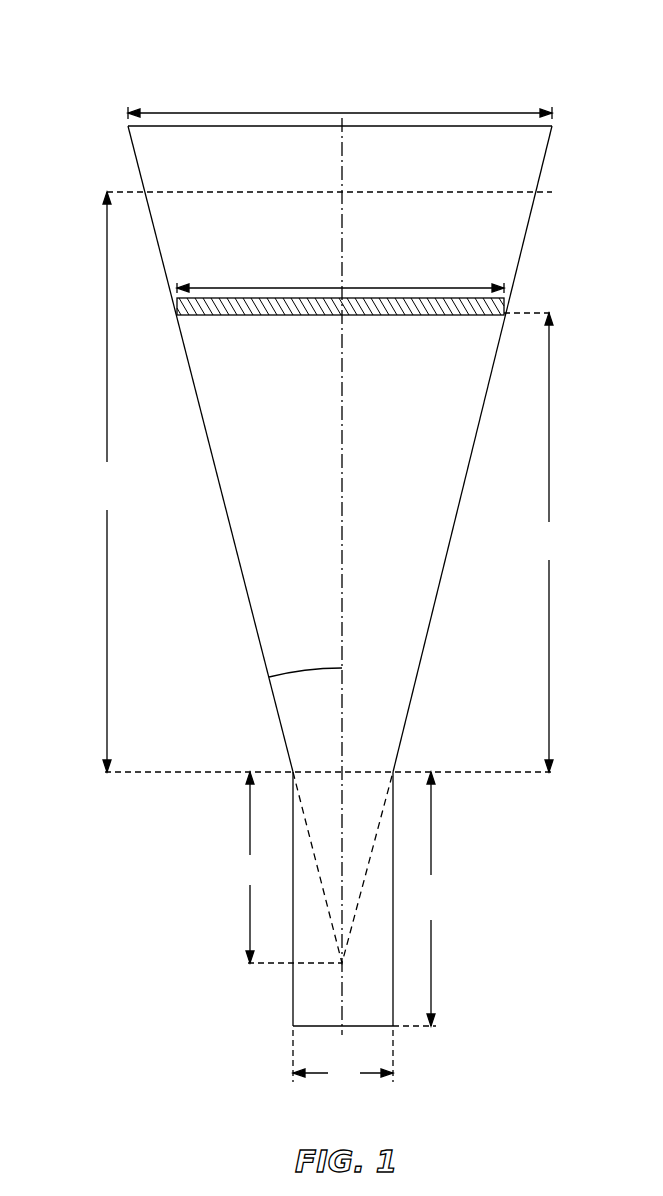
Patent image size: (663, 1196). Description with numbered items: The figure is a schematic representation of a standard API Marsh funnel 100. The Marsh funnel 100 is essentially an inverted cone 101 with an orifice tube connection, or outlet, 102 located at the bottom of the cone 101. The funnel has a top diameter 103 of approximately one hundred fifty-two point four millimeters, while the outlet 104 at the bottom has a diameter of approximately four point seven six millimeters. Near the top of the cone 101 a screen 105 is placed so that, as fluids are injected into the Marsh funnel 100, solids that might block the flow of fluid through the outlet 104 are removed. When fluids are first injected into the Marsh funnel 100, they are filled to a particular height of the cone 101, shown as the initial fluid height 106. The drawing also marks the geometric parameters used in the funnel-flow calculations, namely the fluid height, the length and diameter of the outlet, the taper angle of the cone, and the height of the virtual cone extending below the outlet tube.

The Marsh funnel 100 is at (336, 553).
The inverted cone 101 is at (443, 570).
The orifice tube connection (outlet) 102 is at (293, 985).
The top diameter 103 is at (405, 110).
The outlet 104 is at (365, 1026).
The screen 105 is at (515, 156).
The initial fluid height 106 is at (133, 153).